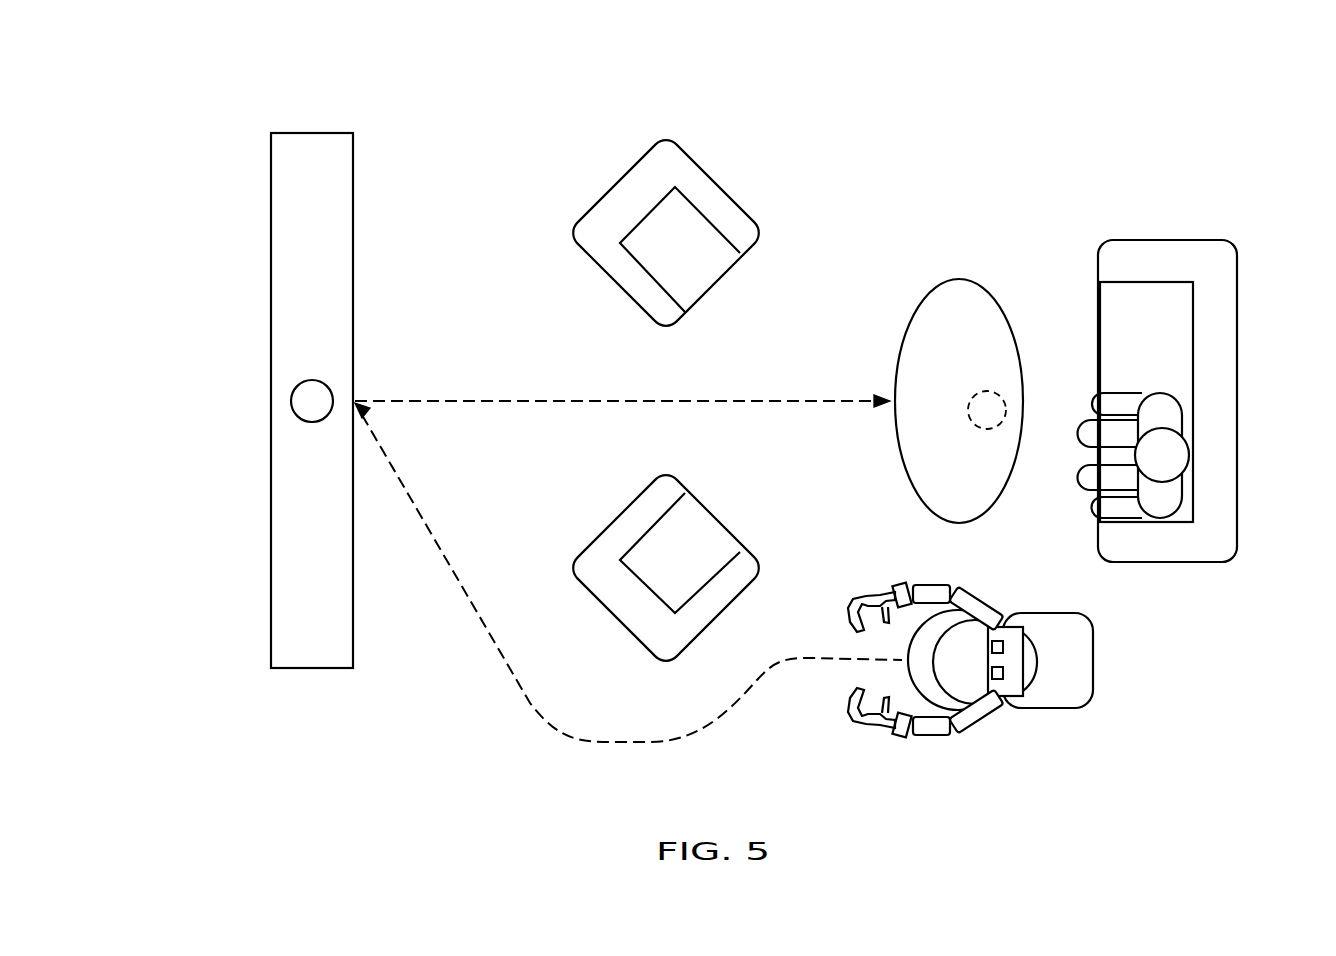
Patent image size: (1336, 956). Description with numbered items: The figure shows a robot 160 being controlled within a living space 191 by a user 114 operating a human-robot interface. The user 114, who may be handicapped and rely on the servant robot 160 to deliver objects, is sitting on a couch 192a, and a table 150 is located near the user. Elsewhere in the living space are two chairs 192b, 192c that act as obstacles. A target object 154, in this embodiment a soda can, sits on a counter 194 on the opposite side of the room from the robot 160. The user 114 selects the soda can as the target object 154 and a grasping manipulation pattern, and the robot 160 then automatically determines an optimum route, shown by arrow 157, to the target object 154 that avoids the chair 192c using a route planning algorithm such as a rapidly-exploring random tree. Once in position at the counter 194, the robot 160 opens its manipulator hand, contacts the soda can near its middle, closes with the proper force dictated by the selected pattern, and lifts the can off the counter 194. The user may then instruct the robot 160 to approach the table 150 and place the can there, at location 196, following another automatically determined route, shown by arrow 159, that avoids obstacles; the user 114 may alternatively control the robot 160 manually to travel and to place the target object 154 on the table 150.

The operating environment 191 is at (178, 97).
The counter 194 is at (353, 221).
The target object 154 is at (311, 380).
The arrow 159 is at (418, 399).
The arrow 157 is at (500, 656).
The chair 192b is at (626, 181).
The chair 192c is at (610, 513).
The table 150 is at (959, 375).
The location 196 is at (975, 393).
The couch 192a is at (1202, 401).
The user 114 is at (1183, 455).
The robot 160 is at (1093, 662).